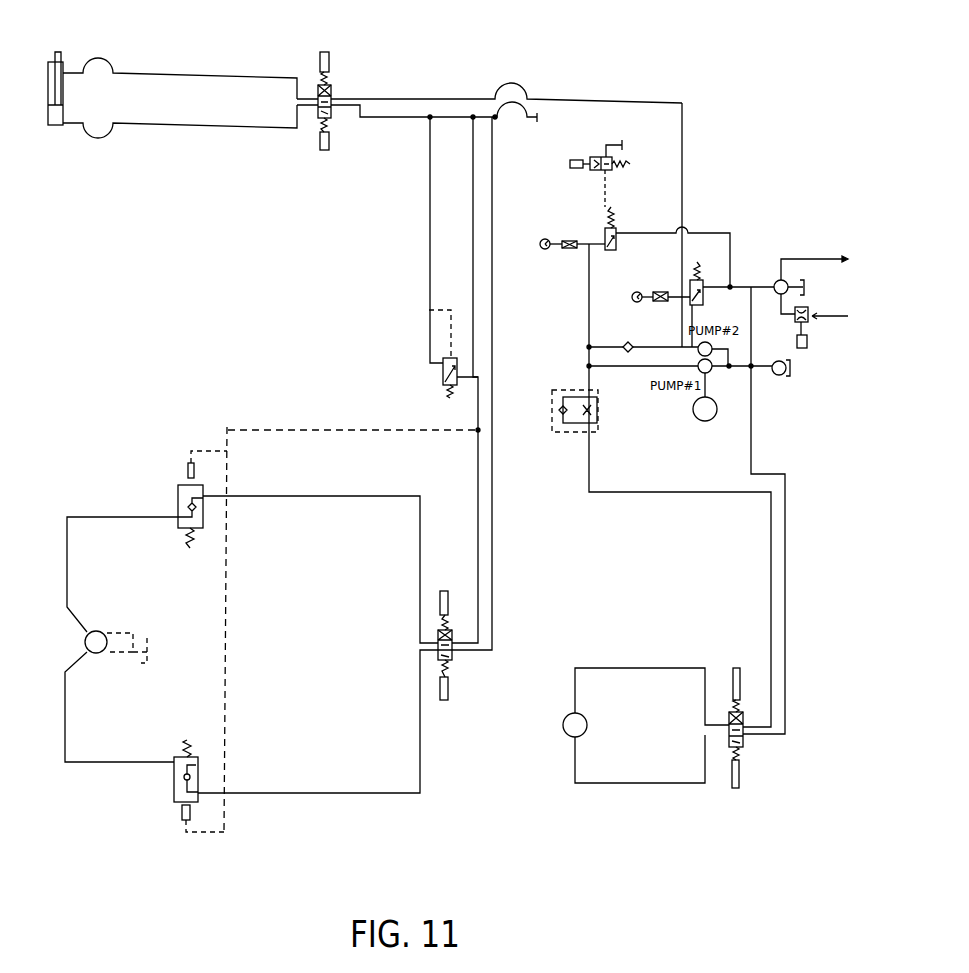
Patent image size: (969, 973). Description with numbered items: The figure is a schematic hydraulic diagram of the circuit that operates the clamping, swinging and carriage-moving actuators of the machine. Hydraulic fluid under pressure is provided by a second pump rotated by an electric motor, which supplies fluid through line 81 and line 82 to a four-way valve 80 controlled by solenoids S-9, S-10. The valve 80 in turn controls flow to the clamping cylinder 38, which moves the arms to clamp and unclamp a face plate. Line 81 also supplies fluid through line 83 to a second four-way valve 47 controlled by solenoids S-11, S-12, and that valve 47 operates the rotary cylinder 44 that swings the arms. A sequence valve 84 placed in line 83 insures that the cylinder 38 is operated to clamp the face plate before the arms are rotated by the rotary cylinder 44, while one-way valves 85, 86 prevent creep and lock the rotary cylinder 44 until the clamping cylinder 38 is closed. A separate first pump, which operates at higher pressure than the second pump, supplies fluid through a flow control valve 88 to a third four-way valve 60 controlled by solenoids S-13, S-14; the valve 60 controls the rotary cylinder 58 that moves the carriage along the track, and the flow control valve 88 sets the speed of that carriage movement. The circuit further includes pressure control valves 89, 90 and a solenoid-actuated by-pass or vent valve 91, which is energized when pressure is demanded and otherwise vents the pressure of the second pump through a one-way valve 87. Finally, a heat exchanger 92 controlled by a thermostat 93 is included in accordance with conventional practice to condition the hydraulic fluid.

The cylinder 38 is at (48, 80).
The four-way valve 80 is at (331, 92).
The line 81 is at (658, 103).
The line 82 is at (430, 117).
The line 83 is at (429, 253).
The sequence valve 84 is at (443, 375).
The one-way valve 85 is at (198, 777).
The one-way valve 86 is at (203, 492).
The rotary cylinder 44 is at (98, 653).
The four-way valve 47 is at (453, 655).
The rotary cylinder 58 is at (567, 714).
The four-way valve 60 is at (743, 740).
The one-way valve 87 is at (624, 343).
The flow control valve 88 is at (598, 398).
The pressure control valve 89 is at (677, 294).
The pressure control valve 90 is at (604, 245).
The by-pass or vent valve 91 is at (603, 171).
The heat exchanger 92 is at (776, 281).
The thermostat 93 is at (795, 320).
The solenoid S-10 is at (324, 52).
The solenoid S-9 is at (324, 150).
The solenoid S-12 is at (447, 590).
The solenoid S-11 is at (445, 700).
The solenoid S-14 is at (736, 668).
The solenoid S-13 is at (736, 788).